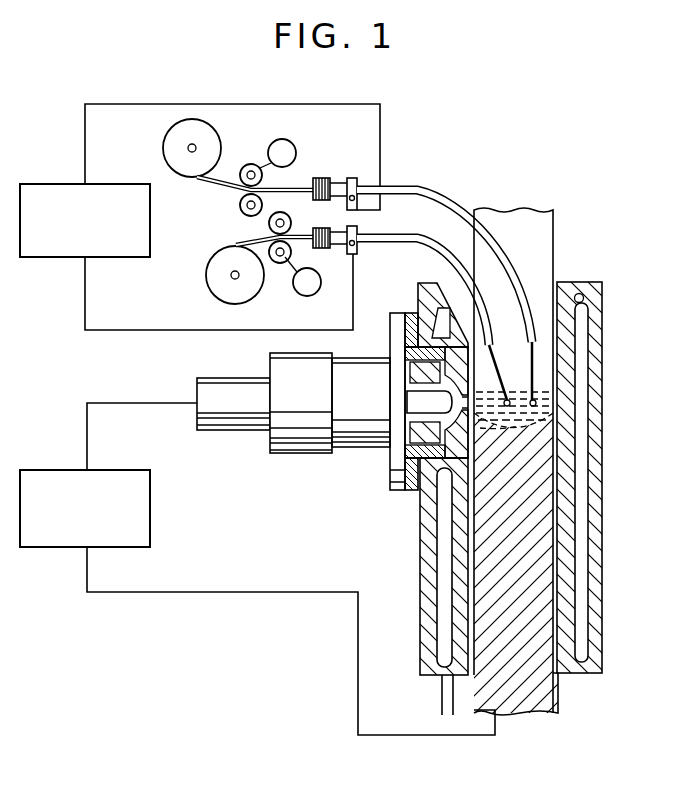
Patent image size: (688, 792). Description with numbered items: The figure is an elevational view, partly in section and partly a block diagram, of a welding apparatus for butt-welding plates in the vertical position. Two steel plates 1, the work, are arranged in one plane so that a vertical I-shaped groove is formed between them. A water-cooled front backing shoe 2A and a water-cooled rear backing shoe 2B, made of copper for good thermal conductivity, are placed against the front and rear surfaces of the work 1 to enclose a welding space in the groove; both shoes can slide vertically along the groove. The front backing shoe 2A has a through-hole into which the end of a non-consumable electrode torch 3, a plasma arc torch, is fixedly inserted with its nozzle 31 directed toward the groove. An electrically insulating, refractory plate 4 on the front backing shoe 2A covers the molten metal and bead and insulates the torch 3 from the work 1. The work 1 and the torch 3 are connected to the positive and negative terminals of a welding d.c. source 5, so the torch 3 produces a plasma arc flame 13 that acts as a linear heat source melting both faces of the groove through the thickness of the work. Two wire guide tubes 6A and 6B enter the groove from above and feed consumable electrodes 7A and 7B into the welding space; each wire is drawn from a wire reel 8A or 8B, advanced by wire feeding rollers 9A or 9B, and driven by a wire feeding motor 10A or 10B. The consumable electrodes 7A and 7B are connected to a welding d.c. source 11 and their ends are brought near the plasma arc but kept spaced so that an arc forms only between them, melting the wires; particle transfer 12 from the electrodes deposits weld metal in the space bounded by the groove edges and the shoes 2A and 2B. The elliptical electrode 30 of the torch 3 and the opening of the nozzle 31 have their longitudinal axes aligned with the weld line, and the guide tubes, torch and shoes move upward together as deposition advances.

The steel plates 1 is at (535, 713).
The front backing shoe 2A is at (420, 558).
The rear backing shoe 2B is at (600, 300).
The non-consumable electrode torch 3 is at (296, 447).
The electrically insulating plate 4 is at (468, 677).
The welding d.c. source 5 is at (150, 508).
The wire guide tube 6A is at (439, 244).
The wire guide tube 6B is at (457, 194).
The consumable electrode 7A is at (497, 365).
The consumable electrode 7B is at (536, 369).
The wire reel 8A is at (206, 284).
The wire reel 8B is at (168, 140).
The wire feeding rollers 9A is at (278, 264).
The wire feeding rollers 9B is at (249, 164).
The wire feeding motor 10A is at (321, 282).
The wire feeding motor 10B is at (291, 140).
The welding d.c. source 11 is at (150, 222).
The particle transfer 12 is at (540, 414).
The plasma arc flame 13 is at (517, 392).
The elliptical electrode 30 is at (404, 402).
The nozzle 31 is at (472, 443).